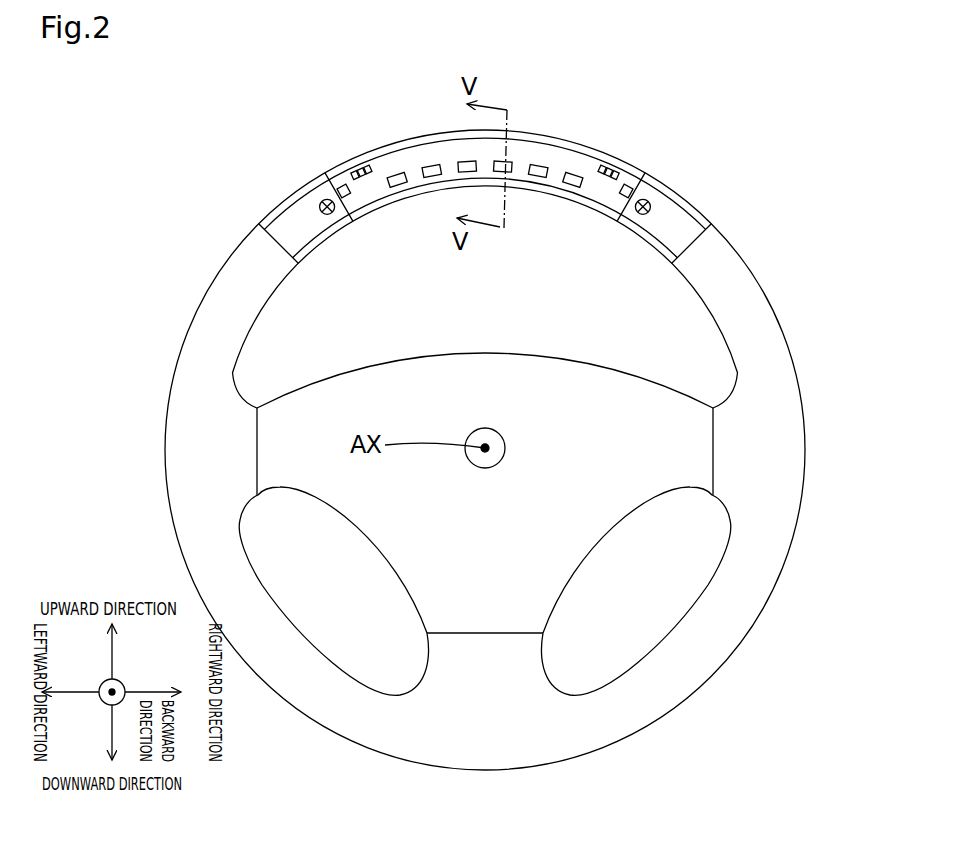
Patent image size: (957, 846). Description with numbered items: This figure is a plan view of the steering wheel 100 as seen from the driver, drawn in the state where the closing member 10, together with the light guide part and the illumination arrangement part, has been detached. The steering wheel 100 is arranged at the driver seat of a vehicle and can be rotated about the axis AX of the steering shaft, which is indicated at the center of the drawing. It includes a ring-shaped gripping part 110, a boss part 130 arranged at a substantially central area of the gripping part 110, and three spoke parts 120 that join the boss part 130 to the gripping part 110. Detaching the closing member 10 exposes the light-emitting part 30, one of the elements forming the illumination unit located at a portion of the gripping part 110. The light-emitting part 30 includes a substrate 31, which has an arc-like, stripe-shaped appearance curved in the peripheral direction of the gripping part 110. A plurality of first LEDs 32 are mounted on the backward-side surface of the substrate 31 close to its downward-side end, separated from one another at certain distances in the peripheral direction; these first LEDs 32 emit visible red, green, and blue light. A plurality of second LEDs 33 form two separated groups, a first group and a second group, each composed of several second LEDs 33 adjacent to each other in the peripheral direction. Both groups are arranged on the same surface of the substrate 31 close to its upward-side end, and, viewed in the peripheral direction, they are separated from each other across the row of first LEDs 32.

The closing member 10 is at (500, 433).
The light-emitting part 30 is at (359, 226).
The substrate 31 is at (385, 165).
The first LEDs 32 is at (430, 167).
The second LEDs 33 is at (352, 167).
The steering wheel 100 is at (225, 187).
The gripping part 110 is at (735, 250).
The spoke parts 120 is at (257, 407).
The boss part 130 is at (410, 368).